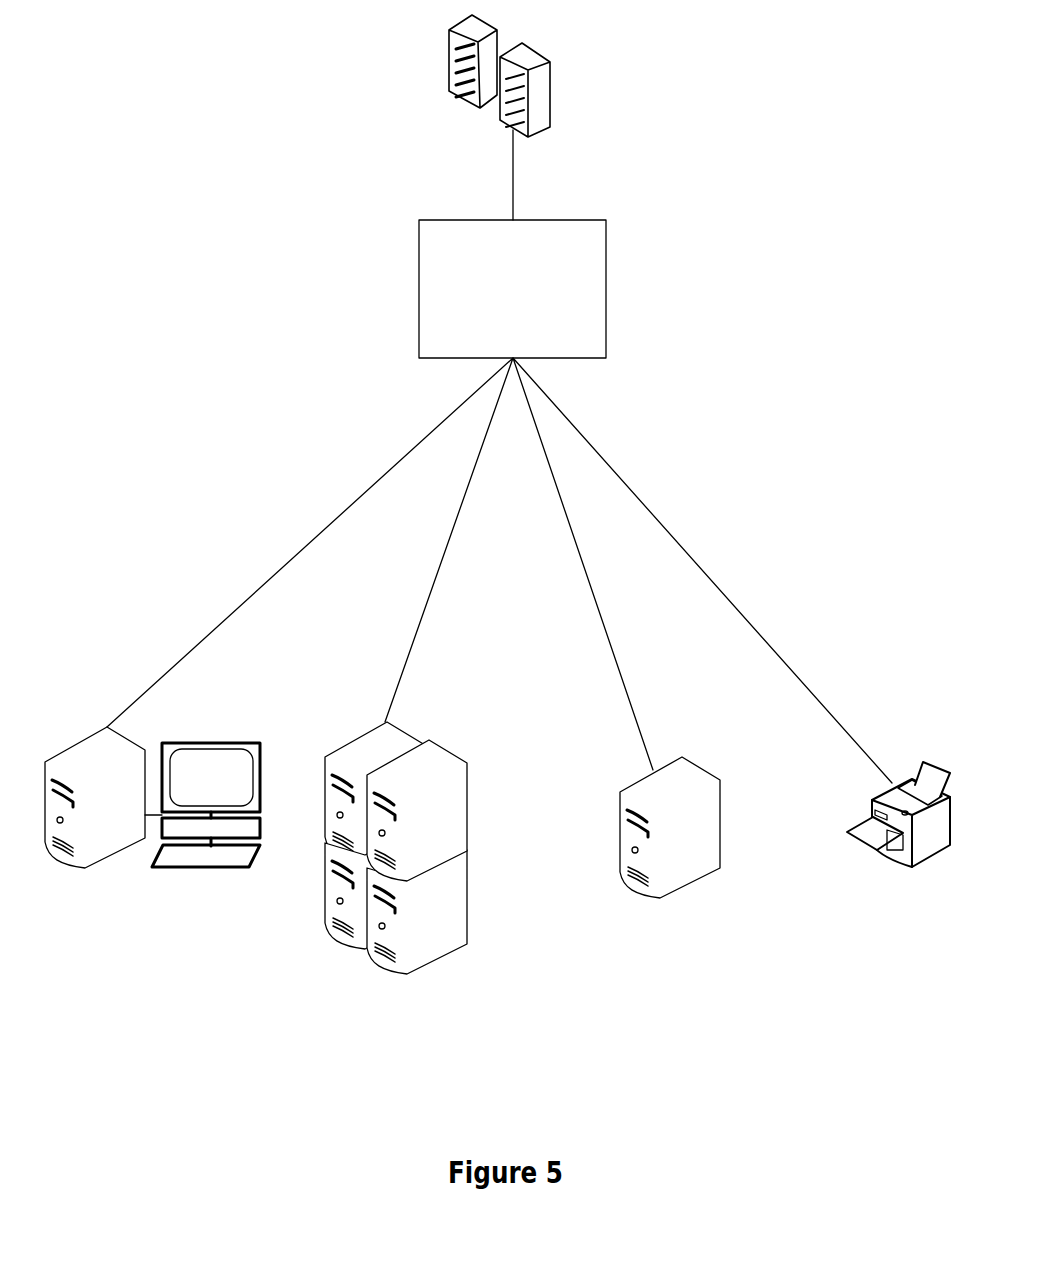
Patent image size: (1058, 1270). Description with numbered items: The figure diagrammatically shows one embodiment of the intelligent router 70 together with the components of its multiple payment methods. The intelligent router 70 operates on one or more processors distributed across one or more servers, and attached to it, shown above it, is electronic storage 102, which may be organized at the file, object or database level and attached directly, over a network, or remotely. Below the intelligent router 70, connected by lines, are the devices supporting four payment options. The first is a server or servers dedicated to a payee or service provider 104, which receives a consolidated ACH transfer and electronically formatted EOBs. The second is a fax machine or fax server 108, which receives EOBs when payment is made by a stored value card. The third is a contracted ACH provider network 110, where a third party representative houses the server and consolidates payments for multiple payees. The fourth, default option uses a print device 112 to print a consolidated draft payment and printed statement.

The electronic storage 102 is at (449, 70).
The intelligent router 70 is at (419, 290).
The payee or service provider server 104 is at (85, 868).
The contracted ACH provider network 110 is at (405, 968).
The fax machine or fax server 108 is at (660, 897).
The print device 112 is at (912, 868).